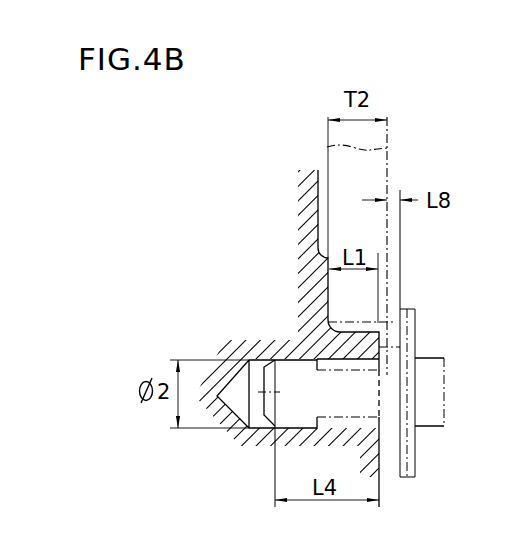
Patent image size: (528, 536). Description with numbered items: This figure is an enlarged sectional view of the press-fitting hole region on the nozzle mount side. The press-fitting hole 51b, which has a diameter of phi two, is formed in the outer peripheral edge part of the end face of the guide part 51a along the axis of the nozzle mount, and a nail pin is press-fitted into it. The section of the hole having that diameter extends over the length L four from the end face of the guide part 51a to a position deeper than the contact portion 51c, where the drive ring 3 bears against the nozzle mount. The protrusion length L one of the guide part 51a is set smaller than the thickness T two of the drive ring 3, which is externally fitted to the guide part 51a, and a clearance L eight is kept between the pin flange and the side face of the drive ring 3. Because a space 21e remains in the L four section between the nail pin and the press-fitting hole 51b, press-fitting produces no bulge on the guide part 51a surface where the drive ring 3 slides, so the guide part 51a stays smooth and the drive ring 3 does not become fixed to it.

The drive ring 3 is at (370, 170).
The guide part 51a is at (361, 333).
The press-fitting hole 51b is at (256, 423).
The contact portion 51c is at (325, 299).
The space 21e is at (357, 421).